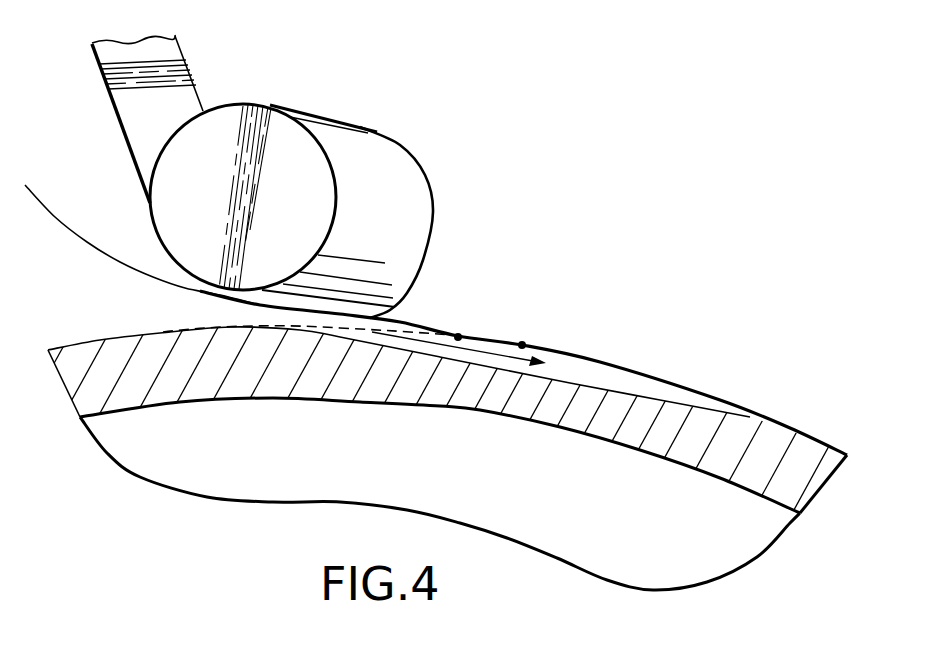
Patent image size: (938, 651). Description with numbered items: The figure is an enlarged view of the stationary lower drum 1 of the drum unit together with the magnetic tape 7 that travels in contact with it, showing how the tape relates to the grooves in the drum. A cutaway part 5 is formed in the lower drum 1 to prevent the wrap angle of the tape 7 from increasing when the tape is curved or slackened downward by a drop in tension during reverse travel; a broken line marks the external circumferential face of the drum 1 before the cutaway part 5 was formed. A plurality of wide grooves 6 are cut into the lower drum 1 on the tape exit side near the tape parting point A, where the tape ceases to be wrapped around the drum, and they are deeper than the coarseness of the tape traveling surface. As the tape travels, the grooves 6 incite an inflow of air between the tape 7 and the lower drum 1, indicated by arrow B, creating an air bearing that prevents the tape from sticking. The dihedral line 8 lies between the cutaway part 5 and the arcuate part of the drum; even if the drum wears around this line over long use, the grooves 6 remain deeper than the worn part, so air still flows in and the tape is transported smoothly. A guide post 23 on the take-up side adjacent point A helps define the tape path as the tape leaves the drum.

The lower drum 1 is at (157, 385).
The cutaway part 5 is at (197, 329).
The grooves 6 is at (561, 372).
The magnetic tape 7 is at (394, 315).
The dihedral line 8 is at (458, 333).
The tape parting point A is at (522, 342).
The arrow indicating air inflow B is at (57, 210).
The guide post 23 is at (289, 127).